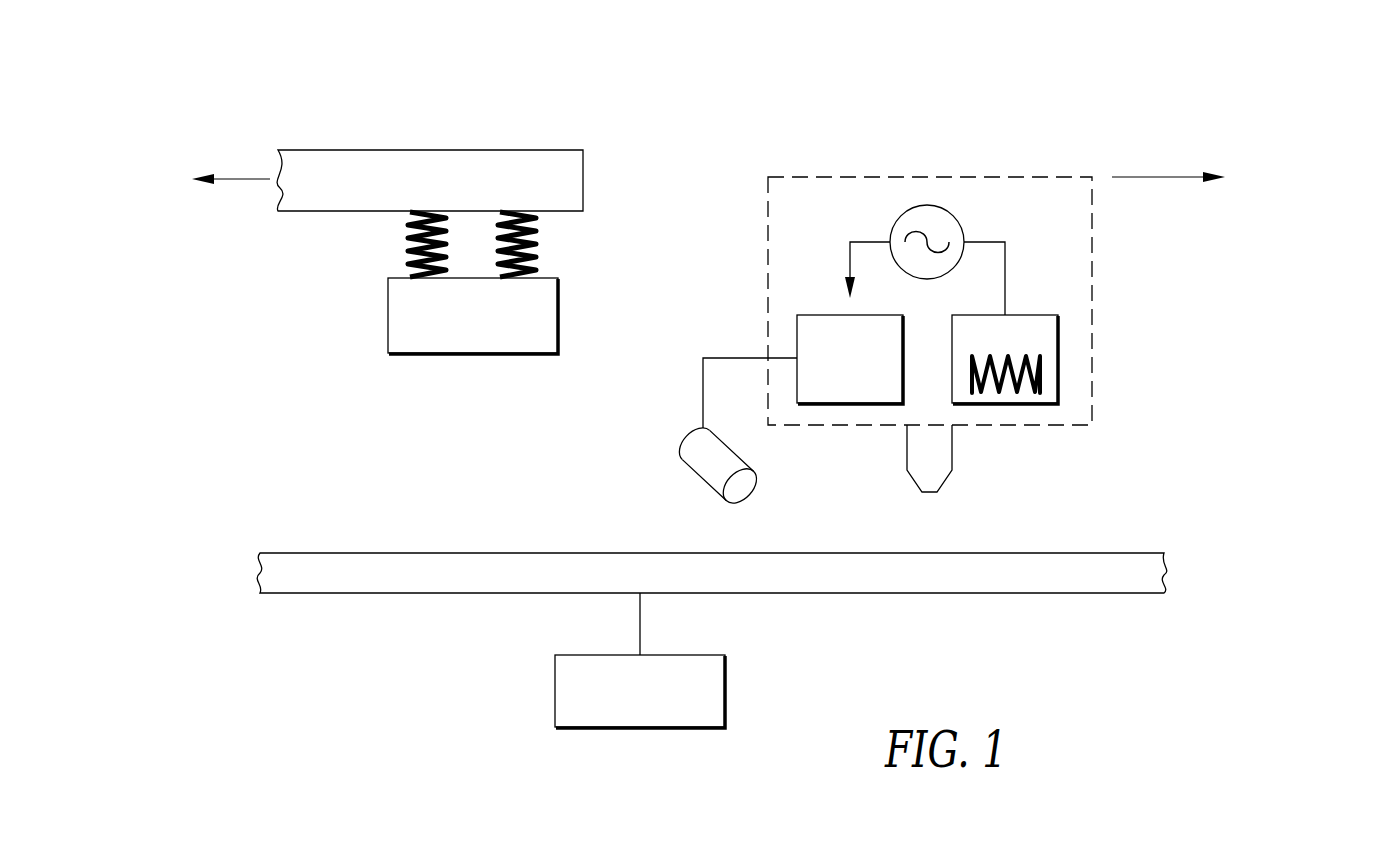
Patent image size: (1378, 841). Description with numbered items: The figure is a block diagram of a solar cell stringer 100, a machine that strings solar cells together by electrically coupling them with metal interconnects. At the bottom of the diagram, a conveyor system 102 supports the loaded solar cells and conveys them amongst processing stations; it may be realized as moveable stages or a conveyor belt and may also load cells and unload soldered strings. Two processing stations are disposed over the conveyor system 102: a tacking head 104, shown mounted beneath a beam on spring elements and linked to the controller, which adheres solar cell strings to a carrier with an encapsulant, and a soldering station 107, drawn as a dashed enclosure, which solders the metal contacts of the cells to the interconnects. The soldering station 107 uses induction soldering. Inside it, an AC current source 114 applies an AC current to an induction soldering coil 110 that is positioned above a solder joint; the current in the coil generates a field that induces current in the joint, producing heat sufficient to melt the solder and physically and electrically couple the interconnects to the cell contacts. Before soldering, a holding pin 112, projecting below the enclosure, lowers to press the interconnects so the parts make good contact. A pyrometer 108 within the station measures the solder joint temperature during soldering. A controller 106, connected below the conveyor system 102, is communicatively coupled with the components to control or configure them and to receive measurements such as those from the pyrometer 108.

The solar cell stringer 100 is at (735, 52).
The conveyor system 102 is at (616, 584).
The tacking head 104 is at (448, 326).
The controller 106 is at (618, 716).
The soldering station 107 is at (920, 122).
The pyrometer 108 is at (828, 367).
The induction soldering coil 110 is at (986, 341).
The holding pin 112 is at (947, 478).
The AC current source 114 is at (956, 219).